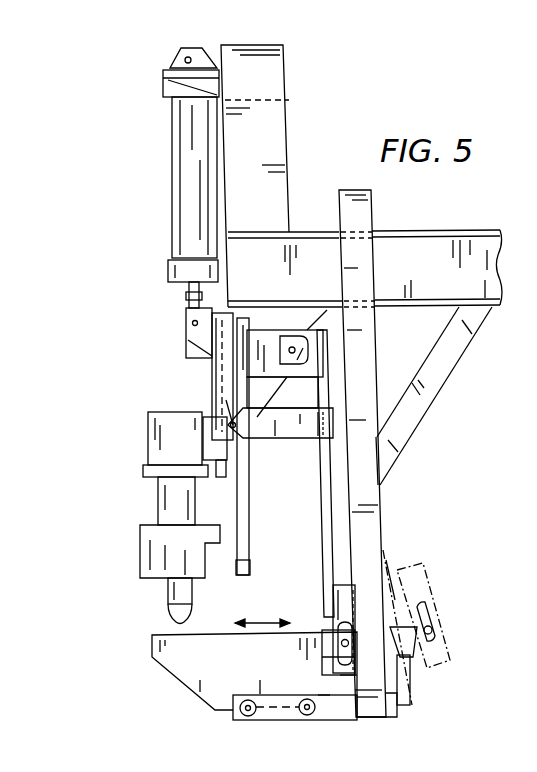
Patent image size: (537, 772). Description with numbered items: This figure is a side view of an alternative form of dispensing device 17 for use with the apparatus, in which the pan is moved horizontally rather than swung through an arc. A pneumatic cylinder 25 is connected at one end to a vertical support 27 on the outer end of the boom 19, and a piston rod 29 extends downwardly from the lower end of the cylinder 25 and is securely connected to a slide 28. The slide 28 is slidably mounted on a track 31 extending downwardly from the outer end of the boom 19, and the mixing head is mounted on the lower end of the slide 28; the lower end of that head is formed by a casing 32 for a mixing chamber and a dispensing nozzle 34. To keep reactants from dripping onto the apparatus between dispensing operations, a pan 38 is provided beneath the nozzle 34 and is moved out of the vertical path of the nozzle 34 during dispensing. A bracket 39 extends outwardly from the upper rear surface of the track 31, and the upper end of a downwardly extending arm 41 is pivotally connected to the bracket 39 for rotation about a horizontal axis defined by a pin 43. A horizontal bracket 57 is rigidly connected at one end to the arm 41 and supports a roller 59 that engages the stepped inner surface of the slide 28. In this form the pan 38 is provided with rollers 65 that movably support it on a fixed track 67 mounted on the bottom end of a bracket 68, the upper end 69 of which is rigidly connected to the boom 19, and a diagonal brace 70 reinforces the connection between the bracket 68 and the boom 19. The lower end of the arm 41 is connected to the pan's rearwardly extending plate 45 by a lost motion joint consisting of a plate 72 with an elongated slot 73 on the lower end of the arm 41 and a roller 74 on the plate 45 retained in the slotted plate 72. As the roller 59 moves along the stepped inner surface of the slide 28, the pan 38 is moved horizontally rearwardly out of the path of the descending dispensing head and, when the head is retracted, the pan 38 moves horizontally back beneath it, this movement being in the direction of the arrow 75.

The dispensing device 17 is at (140, 282).
The boom 19 is at (432, 234).
The pneumatic cylinder 25 is at (176, 172).
The vertical support 27 is at (284, 164).
The slide 28 is at (205, 366).
The piston rod 29 is at (188, 298).
The track 31 is at (244, 514).
The casing 32 is at (168, 596).
The dispensing nozzle 34 is at (172, 622).
The pan 38 is at (252, 672).
The bracket 39 is at (264, 330).
The arm 41 is at (328, 512).
The pin 43 is at (292, 353).
The plate 45 is at (328, 630).
The horizontal bracket 57 is at (292, 438).
The roller 59 is at (221, 468).
The rollers 65 is at (302, 716).
The fixed track 67 is at (325, 696).
The bracket 68 is at (377, 515).
The upper end 69 is at (365, 210).
The diagonal brace 70 is at (452, 366).
The plate 72 is at (352, 588).
The elongated slot 73 is at (362, 674).
The roller 74 is at (340, 608).
The arrow 75 is at (256, 623).